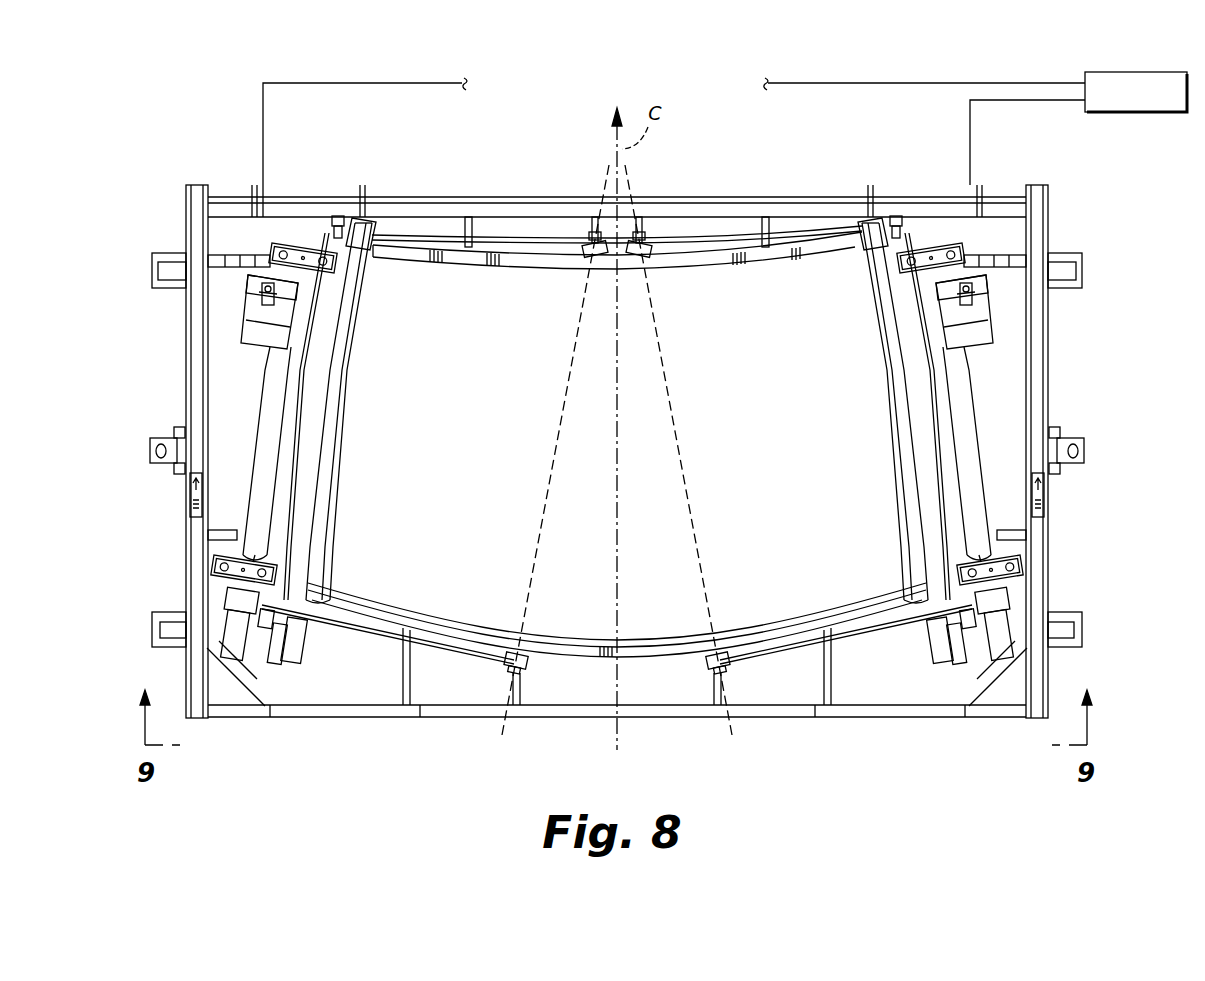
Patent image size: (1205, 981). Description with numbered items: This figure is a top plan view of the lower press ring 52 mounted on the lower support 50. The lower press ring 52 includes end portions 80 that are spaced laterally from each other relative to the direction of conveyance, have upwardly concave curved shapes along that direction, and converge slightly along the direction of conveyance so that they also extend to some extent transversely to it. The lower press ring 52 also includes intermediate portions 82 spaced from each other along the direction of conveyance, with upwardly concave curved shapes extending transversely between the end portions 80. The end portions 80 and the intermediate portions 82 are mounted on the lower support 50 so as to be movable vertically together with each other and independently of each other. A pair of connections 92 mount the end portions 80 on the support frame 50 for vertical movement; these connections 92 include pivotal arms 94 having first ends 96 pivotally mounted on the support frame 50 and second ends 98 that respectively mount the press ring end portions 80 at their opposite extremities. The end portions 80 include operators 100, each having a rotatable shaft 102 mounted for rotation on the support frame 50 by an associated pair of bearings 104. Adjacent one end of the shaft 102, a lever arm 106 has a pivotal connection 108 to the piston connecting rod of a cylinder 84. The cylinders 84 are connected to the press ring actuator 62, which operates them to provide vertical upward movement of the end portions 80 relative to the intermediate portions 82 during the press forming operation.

The lower support 50 is at (418, 718).
The lower press ring 52 is at (790, 240).
The press ring actuator 62 is at (1143, 72).
The end portions 80 is at (308, 428).
The intermediate portions 82 is at (706, 250).
The cylinders 84 is at (253, 298).
The connections 92 is at (360, 643).
The pivotal arms 94 is at (492, 236).
The first ends 96 is at (590, 242).
The second ends 98 is at (360, 228).
The operators 100 is at (257, 372).
The rotatable shaft 102 is at (252, 428).
The bearings 104 is at (292, 240).
The lever arm 106 is at (270, 297).
The pivotal connection 108 is at (270, 270).